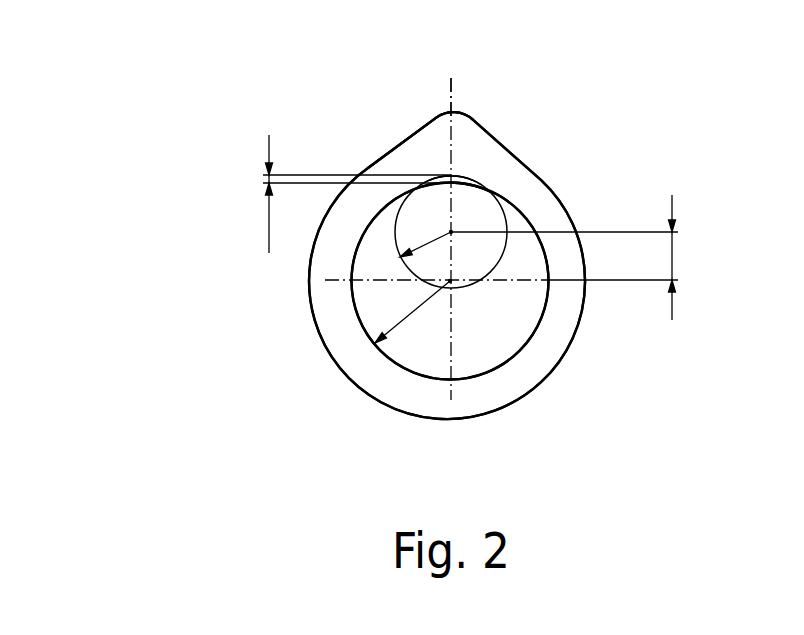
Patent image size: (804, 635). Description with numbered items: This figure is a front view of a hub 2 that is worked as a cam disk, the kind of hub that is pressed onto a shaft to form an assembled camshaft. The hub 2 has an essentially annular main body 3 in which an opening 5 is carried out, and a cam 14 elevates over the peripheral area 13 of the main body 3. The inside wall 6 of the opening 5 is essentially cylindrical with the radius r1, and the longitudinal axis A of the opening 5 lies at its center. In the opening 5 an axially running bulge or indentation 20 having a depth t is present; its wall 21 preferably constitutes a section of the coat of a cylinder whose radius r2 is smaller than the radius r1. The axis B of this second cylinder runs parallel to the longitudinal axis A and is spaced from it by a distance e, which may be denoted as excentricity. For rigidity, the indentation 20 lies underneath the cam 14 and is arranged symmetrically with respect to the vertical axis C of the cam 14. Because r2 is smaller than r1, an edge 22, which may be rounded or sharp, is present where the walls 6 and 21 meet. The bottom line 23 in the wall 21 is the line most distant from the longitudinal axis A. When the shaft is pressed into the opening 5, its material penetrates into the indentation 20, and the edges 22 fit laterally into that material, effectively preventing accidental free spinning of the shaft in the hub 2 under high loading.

The hub 2 is at (140, 287).
The main body 3 is at (372, 398).
The opening 5 is at (523, 333).
The wall of the opening 6 is at (530, 333).
The peripheral area 13 is at (333, 361).
The cam 14 is at (373, 162).
The indentation 20 is at (477, 178).
The wall of the indentation 21 is at (447, 175).
The edge 22 is at (493, 193).
The bottom line 23 is at (463, 174).
The longitudinal axis A is at (452, 285).
The axis of the second cylinder B is at (451, 232).
The vertical axis of the cam C is at (452, 88).
The radius of the opening r1 is at (401, 310).
The radius of the indentation r2 is at (421, 224).
The excentricity e is at (564, 257).
The depth of the indentation t is at (340, 194).